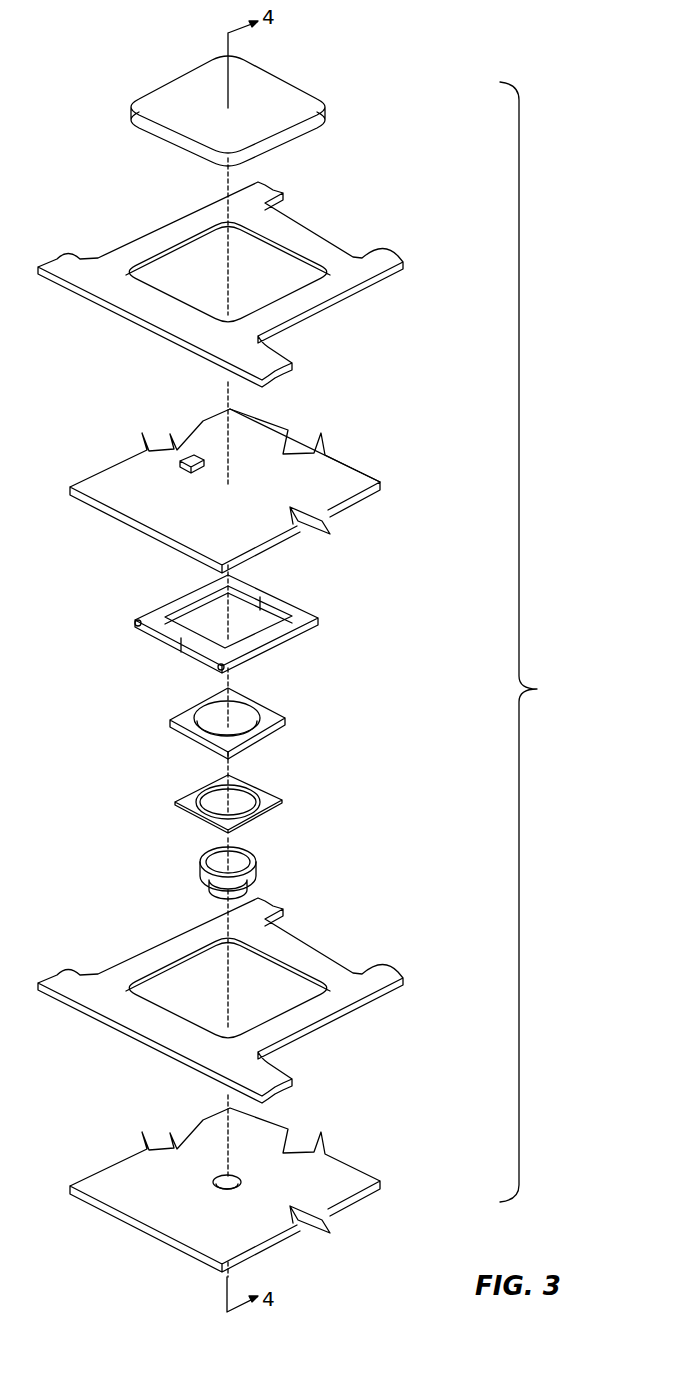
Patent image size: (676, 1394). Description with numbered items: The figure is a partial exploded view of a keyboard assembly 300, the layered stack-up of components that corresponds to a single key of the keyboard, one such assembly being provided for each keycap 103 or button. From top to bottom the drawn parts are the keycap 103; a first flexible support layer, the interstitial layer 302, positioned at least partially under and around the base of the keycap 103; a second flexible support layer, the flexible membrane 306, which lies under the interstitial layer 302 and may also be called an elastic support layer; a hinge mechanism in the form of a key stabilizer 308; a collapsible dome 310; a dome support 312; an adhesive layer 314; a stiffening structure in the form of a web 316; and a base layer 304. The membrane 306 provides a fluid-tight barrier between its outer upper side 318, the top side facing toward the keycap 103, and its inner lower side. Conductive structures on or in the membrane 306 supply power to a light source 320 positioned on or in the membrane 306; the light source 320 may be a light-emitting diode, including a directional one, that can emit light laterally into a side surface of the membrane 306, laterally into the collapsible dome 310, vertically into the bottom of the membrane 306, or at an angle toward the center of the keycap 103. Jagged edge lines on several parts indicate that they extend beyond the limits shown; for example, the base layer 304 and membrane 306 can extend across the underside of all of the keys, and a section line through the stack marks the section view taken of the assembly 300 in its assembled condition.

The keycap 103 is at (127, 106).
The keyboard assembly 300 is at (540, 642).
The interstitial layer 302 is at (322, 247).
The base layer 304 is at (146, 1213).
The flexible membrane 306 is at (257, 491).
The key stabilizer 308 is at (136, 623).
The collapsible dome 310 is at (260, 862).
The dome support 312 is at (170, 720).
The adhesive layer 314 is at (174, 803).
The web 316 is at (383, 970).
The upper side of the membrane 318 is at (328, 468).
The light source 320 is at (198, 469).